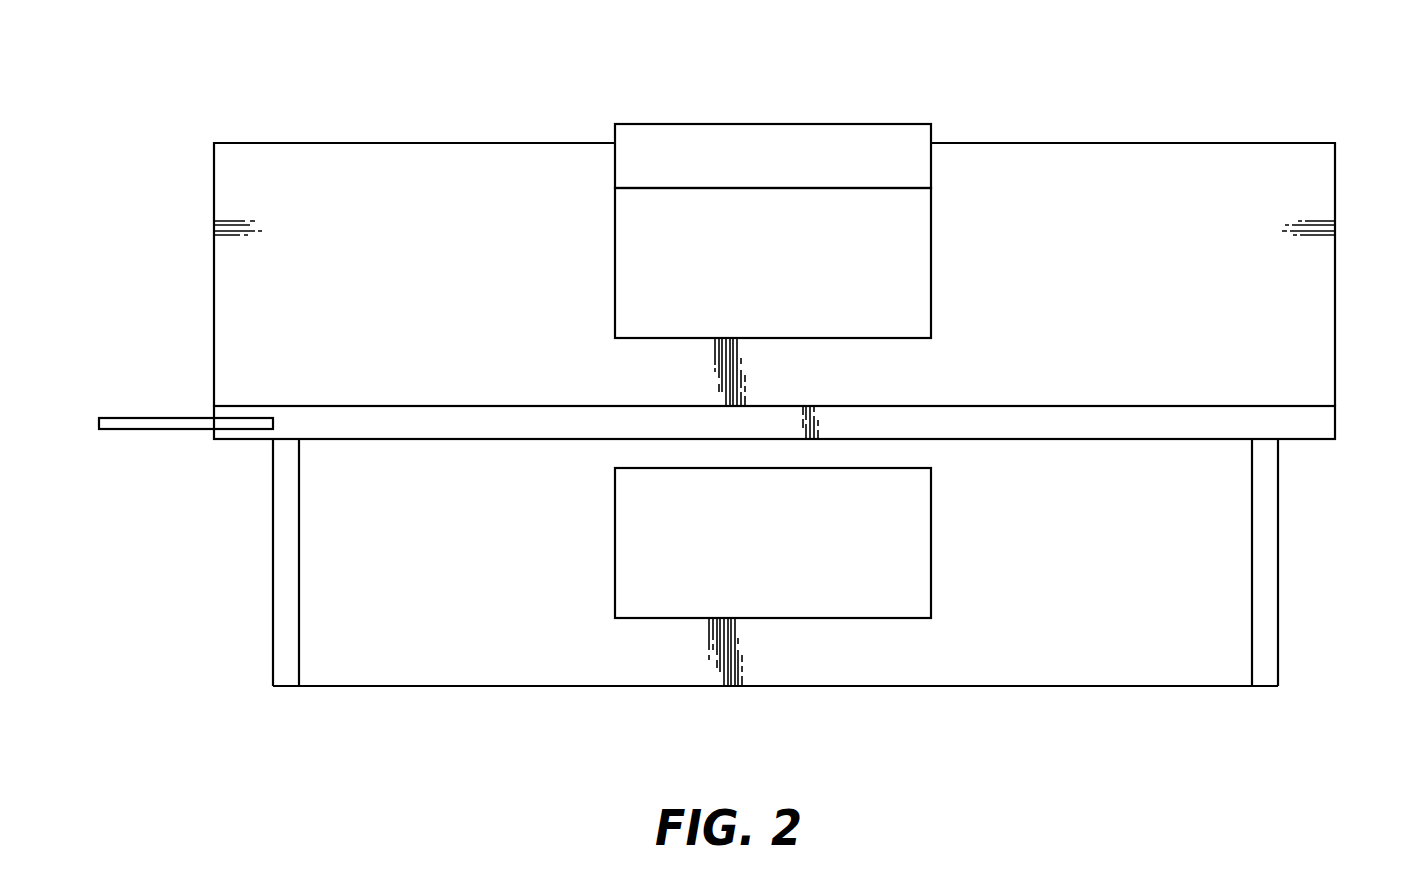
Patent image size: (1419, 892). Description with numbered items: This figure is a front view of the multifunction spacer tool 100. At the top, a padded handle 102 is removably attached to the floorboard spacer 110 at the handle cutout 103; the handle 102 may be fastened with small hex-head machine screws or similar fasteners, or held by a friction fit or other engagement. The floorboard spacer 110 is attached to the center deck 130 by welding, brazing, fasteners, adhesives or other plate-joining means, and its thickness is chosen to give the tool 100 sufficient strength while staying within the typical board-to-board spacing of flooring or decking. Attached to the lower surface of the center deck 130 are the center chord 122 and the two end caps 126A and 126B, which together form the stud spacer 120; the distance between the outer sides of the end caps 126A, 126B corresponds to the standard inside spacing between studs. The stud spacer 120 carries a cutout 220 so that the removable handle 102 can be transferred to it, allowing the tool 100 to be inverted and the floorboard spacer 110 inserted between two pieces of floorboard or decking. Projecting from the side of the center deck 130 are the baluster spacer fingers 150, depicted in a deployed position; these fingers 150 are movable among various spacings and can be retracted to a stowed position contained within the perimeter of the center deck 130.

The tool 100 is at (107, 75).
The padded handle 102 is at (707, 135).
The handle cutout 103 is at (645, 251).
The floorboard spacer 110 is at (1052, 143).
The stud spacer 120 is at (1077, 688).
The center chord 122 is at (393, 655).
The end cap 126A is at (1270, 627).
The end cap 126B is at (280, 627).
The center deck 130 is at (1340, 421).
The baluster spacer fingers 150 is at (156, 418).
The cutout 220 is at (615, 541).